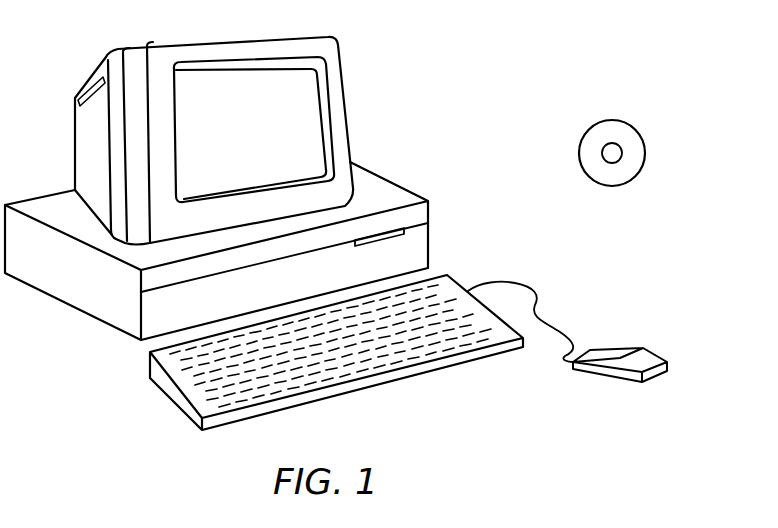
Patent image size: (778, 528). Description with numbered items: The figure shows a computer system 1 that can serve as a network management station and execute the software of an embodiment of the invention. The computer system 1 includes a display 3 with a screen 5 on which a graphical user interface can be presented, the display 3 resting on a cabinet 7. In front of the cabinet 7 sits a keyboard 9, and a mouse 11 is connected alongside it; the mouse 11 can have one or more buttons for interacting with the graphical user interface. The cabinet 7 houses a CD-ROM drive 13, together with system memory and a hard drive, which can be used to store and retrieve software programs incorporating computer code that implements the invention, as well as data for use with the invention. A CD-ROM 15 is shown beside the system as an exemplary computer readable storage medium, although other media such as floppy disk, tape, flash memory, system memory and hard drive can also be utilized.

The computer system 1 is at (523, 48).
The display 3 is at (352, 142).
The screen 5 is at (322, 92).
The cabinet 7 is at (98, 320).
The keyboard 9 is at (388, 383).
The mouse 11 is at (643, 350).
The CD-ROM drive 13 is at (405, 230).
The CD-ROM 15 is at (625, 122).